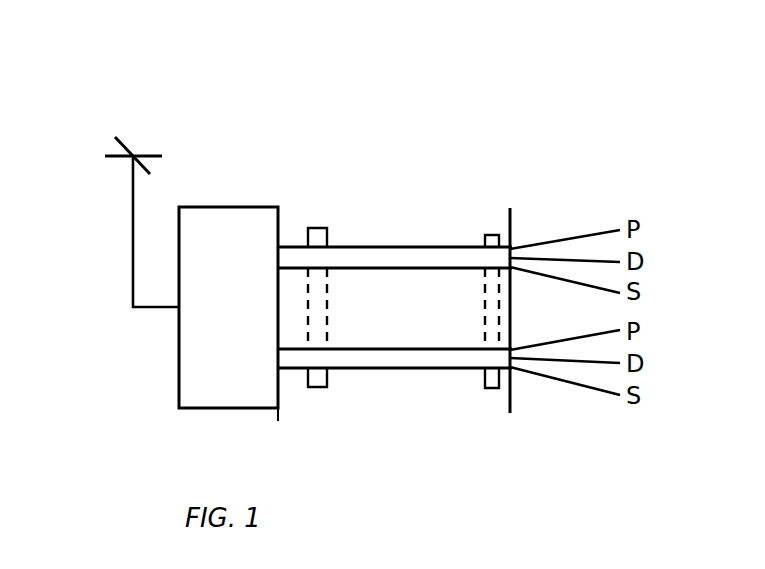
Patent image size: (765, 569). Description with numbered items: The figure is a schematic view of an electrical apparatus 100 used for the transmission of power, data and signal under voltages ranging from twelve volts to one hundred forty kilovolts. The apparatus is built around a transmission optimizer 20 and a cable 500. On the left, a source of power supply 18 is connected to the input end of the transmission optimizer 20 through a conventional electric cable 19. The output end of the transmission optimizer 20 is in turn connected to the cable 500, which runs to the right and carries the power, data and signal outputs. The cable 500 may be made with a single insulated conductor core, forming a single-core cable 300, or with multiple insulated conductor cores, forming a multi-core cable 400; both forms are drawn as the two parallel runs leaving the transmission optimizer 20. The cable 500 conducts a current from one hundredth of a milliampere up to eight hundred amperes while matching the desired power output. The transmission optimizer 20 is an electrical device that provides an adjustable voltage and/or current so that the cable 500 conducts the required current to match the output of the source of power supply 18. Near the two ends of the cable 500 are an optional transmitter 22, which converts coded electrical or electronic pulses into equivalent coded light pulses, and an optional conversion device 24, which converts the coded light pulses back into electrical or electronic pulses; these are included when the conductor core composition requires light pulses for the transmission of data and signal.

The electrical apparatus 100 is at (428, 133).
The source of power supply 18 is at (133, 157).
The conventional electric cable 19 is at (131, 243).
The transmission optimizer 20 is at (198, 207).
The transmitter 22 is at (318, 228).
The conversion device 24 is at (490, 235).
The single-core cable 300 is at (423, 247).
The multi-core cable 400 is at (432, 370).
The cable 500 is at (347, 247).